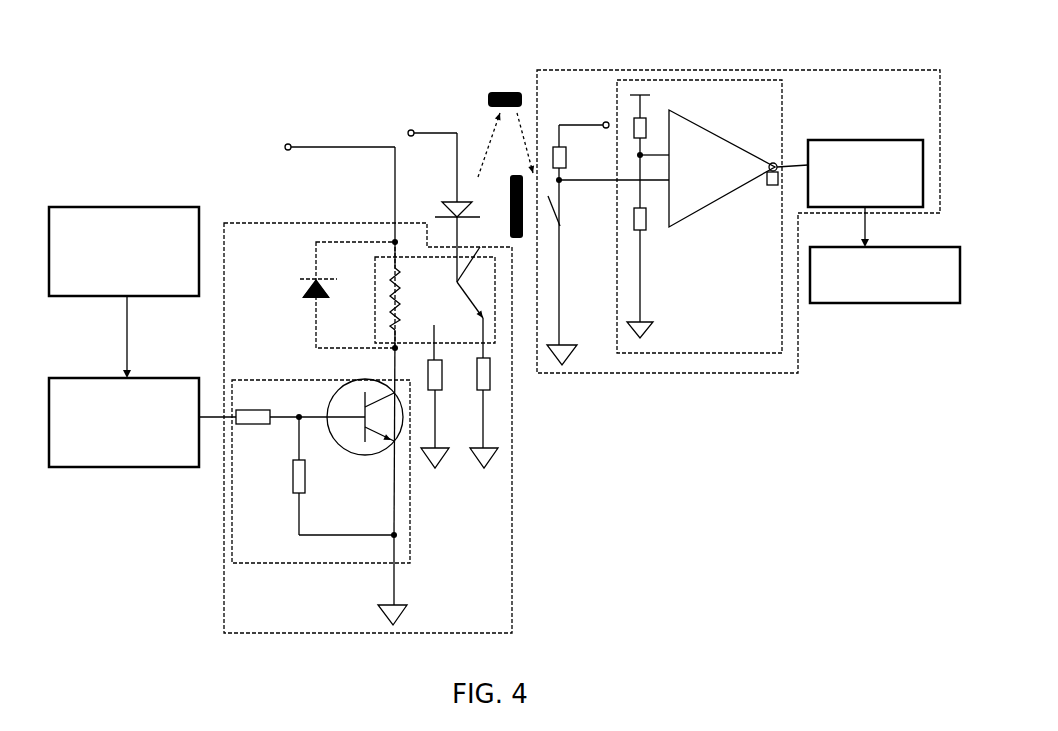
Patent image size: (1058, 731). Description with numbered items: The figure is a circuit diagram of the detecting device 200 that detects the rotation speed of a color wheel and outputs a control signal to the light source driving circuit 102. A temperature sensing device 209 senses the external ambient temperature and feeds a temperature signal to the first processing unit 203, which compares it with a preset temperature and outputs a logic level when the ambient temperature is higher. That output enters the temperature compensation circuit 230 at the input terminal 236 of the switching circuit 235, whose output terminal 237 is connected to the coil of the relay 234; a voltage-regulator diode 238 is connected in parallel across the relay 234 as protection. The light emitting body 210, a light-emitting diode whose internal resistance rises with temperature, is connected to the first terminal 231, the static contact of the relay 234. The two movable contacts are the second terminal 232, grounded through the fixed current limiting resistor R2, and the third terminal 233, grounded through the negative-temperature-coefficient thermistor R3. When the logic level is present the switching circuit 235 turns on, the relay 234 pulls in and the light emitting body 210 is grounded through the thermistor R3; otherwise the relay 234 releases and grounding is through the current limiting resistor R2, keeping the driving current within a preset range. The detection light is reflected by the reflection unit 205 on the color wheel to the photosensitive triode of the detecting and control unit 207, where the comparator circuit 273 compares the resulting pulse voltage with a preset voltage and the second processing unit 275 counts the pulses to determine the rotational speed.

The detecting device 200 is at (151, 82).
The temperature sensing device 209 is at (110, 206).
The first processing unit 203 is at (125, 468).
The temperature compensation circuit 230 is at (510, 578).
The switching circuit 235 is at (322, 568).
The input terminal 236 is at (222, 445).
The relay 234 is at (400, 248).
The voltage-regulator diode 238 is at (310, 287).
The output terminal 237 is at (392, 363).
The third terminal 233 is at (434, 325).
The light emitting body 210 is at (460, 207).
The first terminal 231 is at (485, 269).
The second terminal 232 is at (490, 330).
The reflection unit 205 is at (503, 90).
The detecting and control unit 207 is at (707, 66).
The comparator circuit 273 is at (640, 68).
The second processing unit 275 is at (858, 137).
The light source driving circuit 102 is at (838, 305).
The thermistor R3 is at (417, 367).
The current limiting resistor R2 is at (471, 402).